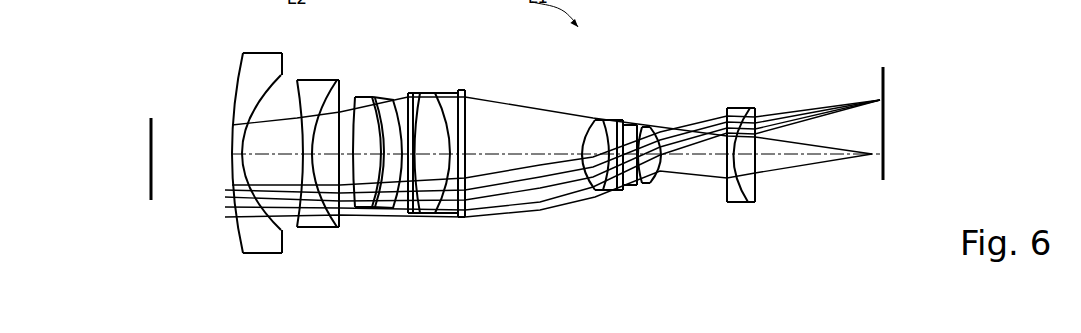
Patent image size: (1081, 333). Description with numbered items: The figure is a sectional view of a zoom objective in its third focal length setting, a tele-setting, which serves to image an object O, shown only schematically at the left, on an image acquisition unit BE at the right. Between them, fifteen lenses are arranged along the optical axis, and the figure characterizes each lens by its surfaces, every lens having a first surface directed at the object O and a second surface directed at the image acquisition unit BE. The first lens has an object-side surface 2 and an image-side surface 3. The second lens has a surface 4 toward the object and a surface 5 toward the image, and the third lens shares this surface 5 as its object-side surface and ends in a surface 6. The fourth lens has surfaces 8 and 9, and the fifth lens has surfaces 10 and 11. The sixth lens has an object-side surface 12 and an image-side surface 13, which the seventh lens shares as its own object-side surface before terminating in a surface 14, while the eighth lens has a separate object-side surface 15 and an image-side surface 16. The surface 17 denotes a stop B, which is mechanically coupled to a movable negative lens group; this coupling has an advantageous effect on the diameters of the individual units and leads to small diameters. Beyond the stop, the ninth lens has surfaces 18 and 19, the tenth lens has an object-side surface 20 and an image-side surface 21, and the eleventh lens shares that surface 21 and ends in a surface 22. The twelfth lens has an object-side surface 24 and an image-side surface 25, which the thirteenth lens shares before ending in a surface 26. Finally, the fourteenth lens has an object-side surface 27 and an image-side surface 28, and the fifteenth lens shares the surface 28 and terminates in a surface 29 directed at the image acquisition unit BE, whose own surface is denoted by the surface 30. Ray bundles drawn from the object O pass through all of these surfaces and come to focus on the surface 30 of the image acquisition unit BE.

The object O is at (148, 125).
The surface of the first lens directed at the object 2 is at (266, 150).
The surface of the first lens directed at the image acquisition unit 3 is at (283, 254).
The surface of the second lens directed at the object 4 is at (298, 78).
The common surface of the second and third lenses 5 is at (331, 228).
The surface of the third lens directed at the image acquisition unit 6 is at (338, 79).
The surface of the fourth lens directed at the object 8 is at (357, 96).
The surface of the fourth lens directed at the image acquisition unit 9 is at (368, 209).
The surface of the fifth lens directed at the object 10 is at (374, 96).
The surface of the fifth lens directed at the image acquisition unit 11 is at (394, 210).
The surface of the sixth lens directed at the object 12 is at (410, 92).
The common surface of the sixth and seventh lenses 13 is at (437, 216).
The surface of the seventh lens directed at the image acquisition unit 14 is at (437, 92).
The surface of the eighth lens directed at the object 15 is at (459, 89).
The surface of the eighth lens directed at the image acquisition unit 16 is at (463, 218).
The stop B is at (588, 116).
The stop surface 17 is at (592, 192).
The surface of the ninth lens directed at the object 18 is at (592, 116).
The surface of the ninth lens directed at the image acquisition unit 19 is at (607, 191).
The surface of the tenth lens directed at the object 20 is at (598, 116).
The common surface of the tenth and eleventh lenses 21 is at (623, 192).
The surface of the eleventh lens directed at the image acquisition unit 22 is at (623, 120).
The surface of the twelfth lens directed at the object 24 is at (640, 125).
The common surface of the twelfth and thirteenth lenses 25 is at (650, 183).
The surface of the thirteenth lens directed at the image acquisition unit 26 is at (653, 126).
The surface of the fourteenth lens directed at the object 27 is at (729, 203).
The common surface of the fourteenth and fifteenth lenses 28 is at (742, 128).
The surface of the fifteenth lens directed at the image acquisition unit 29 is at (749, 203).
The image acquisition unit BE is at (928, 142).
The surface of the image acquisition unit 30 is at (884, 178).